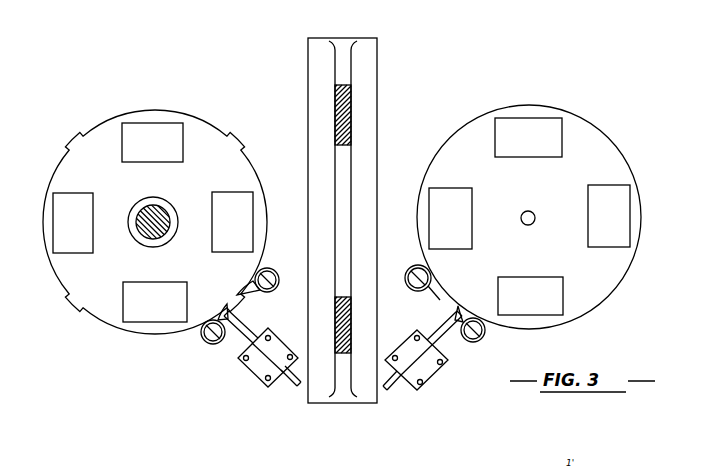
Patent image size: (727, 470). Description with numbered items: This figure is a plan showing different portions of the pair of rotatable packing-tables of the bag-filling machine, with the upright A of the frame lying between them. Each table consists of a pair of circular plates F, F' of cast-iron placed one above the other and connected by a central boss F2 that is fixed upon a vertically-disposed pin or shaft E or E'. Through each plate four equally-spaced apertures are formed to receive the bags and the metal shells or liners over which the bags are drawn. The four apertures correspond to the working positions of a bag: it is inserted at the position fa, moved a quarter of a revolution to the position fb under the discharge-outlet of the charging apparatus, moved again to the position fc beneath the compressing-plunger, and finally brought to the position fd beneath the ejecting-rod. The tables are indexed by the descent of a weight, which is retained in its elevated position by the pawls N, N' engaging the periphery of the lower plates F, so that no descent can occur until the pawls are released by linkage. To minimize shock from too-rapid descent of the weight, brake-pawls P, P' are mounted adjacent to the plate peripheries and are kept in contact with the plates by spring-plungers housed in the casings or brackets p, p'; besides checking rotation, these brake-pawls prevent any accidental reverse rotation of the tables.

The circular plate F is at (161, 222).
The central boss F2 is at (177, 226).
The pin or shaft E' is at (151, 235).
The pawl N is at (259, 289).
The brake-pawl P is at (226, 324).
The casing or bracket p is at (257, 349).
The upright A is at (348, 328).
The circular plate F' is at (529, 222).
The position fa is at (609, 216).
The position fb is at (530, 296).
The position fc is at (450, 218).
The position fd is at (528, 137).
The pin or shaft E is at (538, 219).
The pawl N' is at (422, 291).
The brake-pawl P' is at (470, 336).
The casing or bracket p' is at (423, 350).